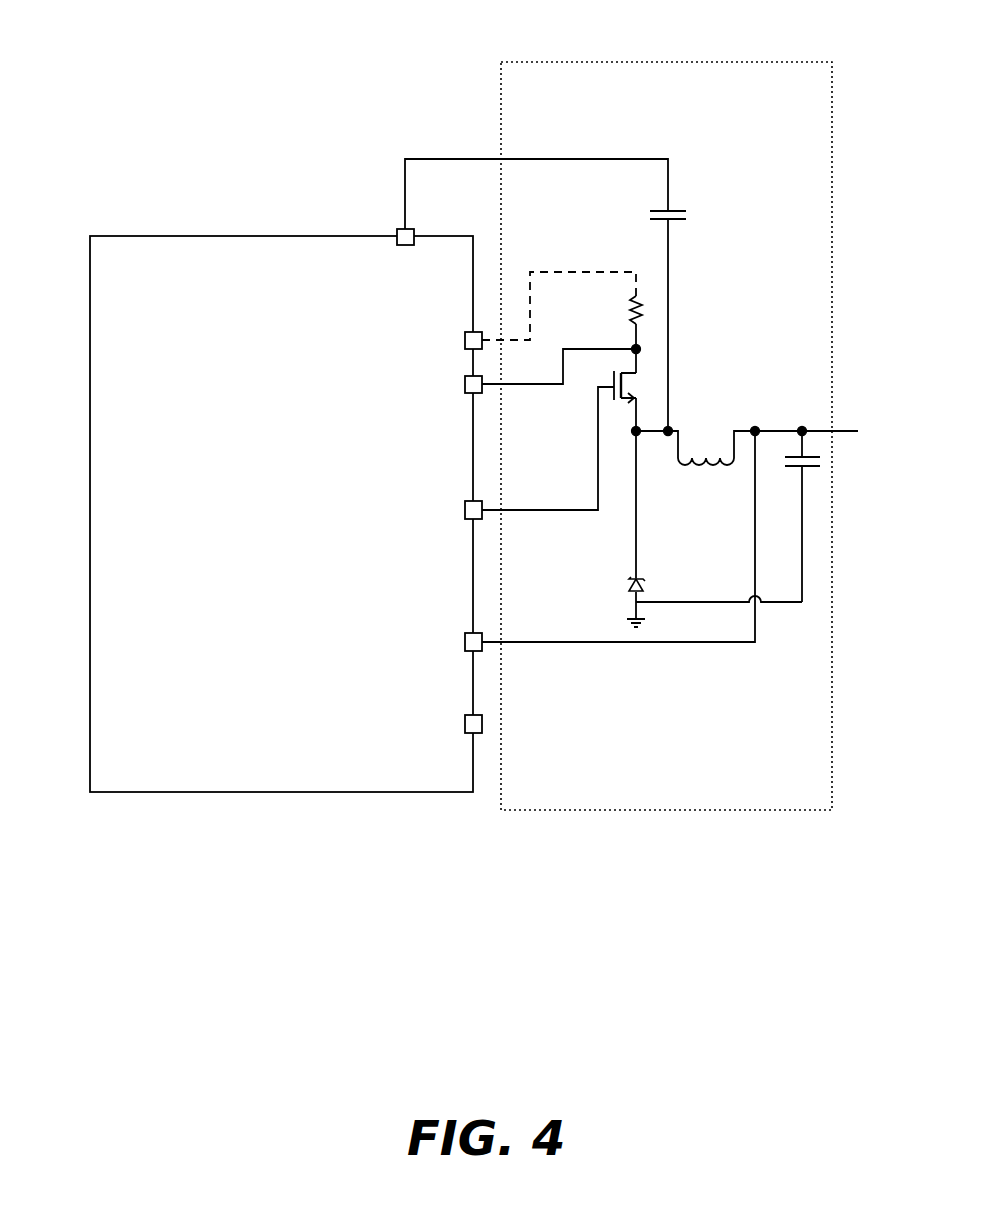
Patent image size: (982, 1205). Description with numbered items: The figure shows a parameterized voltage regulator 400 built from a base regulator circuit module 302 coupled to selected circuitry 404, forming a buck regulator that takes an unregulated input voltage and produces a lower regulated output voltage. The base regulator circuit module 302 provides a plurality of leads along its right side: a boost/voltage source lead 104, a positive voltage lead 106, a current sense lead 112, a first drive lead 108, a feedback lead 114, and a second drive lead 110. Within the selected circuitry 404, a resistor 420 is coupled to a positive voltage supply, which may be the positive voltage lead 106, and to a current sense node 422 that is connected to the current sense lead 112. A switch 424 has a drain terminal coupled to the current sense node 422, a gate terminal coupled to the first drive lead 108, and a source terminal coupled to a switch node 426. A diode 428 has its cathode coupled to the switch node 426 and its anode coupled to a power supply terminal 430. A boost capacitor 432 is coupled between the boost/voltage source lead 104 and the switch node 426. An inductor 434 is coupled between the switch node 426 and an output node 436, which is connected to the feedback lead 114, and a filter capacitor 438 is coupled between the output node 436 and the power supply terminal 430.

The parameterized voltage regulator 400 is at (109, 52).
The base regulator circuit module 302 is at (135, 235).
The boost/voltage source (Boost/VS) lead 104 is at (398, 228).
The positive voltage (Vp) lead 106 is at (465, 333).
The current sense (CS) lead 112 is at (466, 393).
The first drive (DRV1) lead 108 is at (465, 501).
The feedback (FB) lead 114 is at (465, 633).
The second drive (DRV2) lead 110 is at (465, 715).
The selected circuitry 404 is at (655, 62).
The boost capacitor 432 is at (684, 210).
The resistor 420 is at (640, 305).
The current sense node 422 is at (640, 346).
The switch 424 is at (650, 377).
The switch node 426 is at (638, 435).
The inductor 434 is at (718, 458).
The output node 436 is at (806, 428).
The filter capacitor 438 is at (812, 468).
The diode 428 is at (640, 580).
The power supply terminal 430 is at (640, 620).